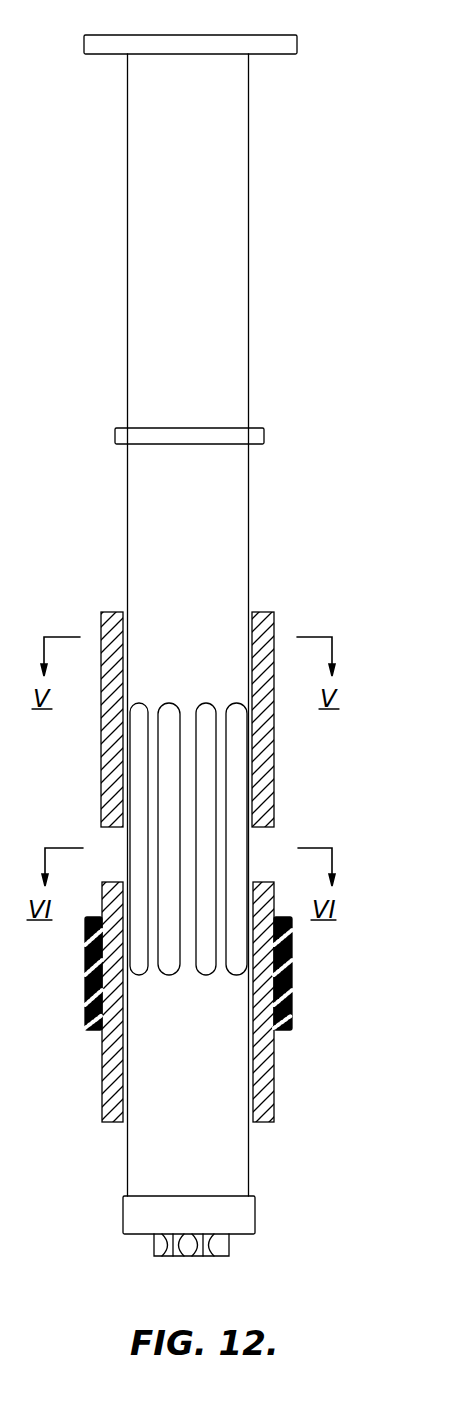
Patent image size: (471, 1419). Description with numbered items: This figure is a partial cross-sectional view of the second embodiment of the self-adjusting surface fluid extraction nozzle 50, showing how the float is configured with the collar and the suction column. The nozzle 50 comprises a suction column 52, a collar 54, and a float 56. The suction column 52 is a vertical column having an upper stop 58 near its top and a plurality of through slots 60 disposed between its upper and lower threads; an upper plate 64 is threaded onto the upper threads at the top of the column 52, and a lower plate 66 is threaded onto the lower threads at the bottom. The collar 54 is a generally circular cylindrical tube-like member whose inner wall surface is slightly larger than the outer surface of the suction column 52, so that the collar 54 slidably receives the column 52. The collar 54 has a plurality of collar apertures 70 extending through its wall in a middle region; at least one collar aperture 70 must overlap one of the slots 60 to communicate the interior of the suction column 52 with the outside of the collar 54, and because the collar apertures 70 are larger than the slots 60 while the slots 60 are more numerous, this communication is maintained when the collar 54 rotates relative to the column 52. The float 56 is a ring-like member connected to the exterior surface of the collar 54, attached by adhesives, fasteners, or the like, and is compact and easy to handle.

The self-adjusting surface fluid extraction nozzle 50 is at (343, 275).
The suction column 52 is at (225, 236).
The collar 54 is at (273, 612).
The float 56 is at (290, 966).
The upper stop 58 is at (255, 438).
The through slots 60 is at (141, 852).
The upper plate 64 is at (265, 45).
The lower plate 66 is at (237, 1218).
The collar apertures 70 is at (270, 845).